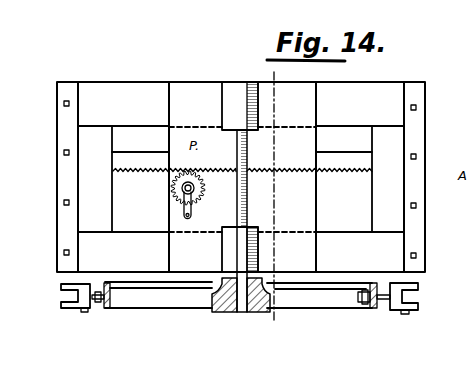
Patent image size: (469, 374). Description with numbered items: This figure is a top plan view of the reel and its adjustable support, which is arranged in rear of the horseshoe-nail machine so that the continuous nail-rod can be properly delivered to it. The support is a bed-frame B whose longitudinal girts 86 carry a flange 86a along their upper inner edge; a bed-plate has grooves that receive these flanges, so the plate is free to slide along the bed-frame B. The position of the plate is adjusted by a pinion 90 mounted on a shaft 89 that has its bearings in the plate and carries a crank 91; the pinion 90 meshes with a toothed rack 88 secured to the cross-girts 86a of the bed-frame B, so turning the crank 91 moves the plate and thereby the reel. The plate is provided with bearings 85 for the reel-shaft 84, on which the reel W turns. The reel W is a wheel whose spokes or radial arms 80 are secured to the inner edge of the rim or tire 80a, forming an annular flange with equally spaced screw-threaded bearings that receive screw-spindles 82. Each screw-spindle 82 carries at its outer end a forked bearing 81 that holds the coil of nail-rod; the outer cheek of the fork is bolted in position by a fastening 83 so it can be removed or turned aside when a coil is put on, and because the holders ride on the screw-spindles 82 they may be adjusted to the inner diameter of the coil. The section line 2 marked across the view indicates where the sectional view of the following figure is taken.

The spokes or radial arms 80 is at (180, 292).
The rim or tire 80a is at (110, 308).
The forked bearing or holder 81 is at (61, 289).
The screw-spindle 82 is at (95, 303).
The nut 83 is at (66, 307).
The reel-shaft 84 is at (249, 212).
The bearings 85 is at (243, 110).
The longitudinal girts 86 is at (241, 181).
The flange 86a is at (238, 179).
The toothed rack 88 is at (133, 152).
The shaft 89 is at (182, 188).
The pinion 90 is at (205, 190).
The crank 91 is at (191, 216).
The reel W is at (312, 320).
The section line z2 z2 2 is at (275, 192).
The bed-frame B is at (22, 188).